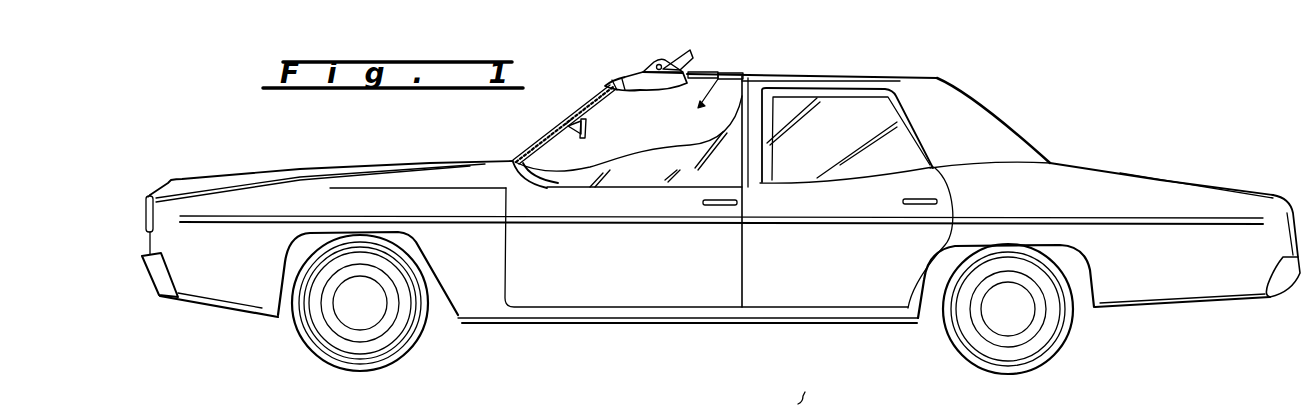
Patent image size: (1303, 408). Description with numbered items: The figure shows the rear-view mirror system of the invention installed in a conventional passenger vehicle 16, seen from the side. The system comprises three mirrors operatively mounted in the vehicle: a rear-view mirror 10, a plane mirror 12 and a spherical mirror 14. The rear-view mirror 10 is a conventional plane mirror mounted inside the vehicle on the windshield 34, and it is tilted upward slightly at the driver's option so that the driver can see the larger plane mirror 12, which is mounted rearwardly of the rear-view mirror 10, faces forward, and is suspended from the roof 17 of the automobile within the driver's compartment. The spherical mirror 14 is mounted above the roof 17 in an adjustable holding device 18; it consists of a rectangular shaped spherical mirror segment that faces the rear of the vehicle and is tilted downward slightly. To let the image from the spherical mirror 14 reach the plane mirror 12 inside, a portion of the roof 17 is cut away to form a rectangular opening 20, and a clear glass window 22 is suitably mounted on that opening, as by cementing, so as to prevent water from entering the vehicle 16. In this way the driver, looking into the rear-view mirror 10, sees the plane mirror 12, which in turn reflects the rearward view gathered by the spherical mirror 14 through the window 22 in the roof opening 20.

The rear-view mirror 10 is at (611, 128).
The plane mirror 12 is at (699, 107).
The spherical mirror 14 is at (695, 57).
The passenger vehicle 16 is at (931, 82).
The roof 17 is at (847, 63).
The adjustable holding device 18 is at (655, 63).
The rectangular opening 20 is at (720, 75).
The clear glass window 22 is at (704, 70).
The windshield 34 is at (566, 124).